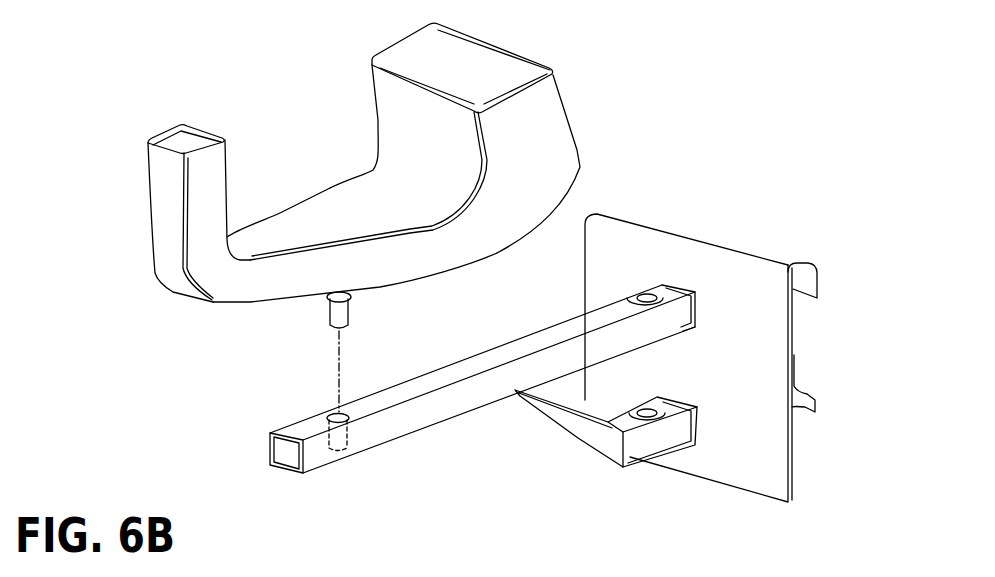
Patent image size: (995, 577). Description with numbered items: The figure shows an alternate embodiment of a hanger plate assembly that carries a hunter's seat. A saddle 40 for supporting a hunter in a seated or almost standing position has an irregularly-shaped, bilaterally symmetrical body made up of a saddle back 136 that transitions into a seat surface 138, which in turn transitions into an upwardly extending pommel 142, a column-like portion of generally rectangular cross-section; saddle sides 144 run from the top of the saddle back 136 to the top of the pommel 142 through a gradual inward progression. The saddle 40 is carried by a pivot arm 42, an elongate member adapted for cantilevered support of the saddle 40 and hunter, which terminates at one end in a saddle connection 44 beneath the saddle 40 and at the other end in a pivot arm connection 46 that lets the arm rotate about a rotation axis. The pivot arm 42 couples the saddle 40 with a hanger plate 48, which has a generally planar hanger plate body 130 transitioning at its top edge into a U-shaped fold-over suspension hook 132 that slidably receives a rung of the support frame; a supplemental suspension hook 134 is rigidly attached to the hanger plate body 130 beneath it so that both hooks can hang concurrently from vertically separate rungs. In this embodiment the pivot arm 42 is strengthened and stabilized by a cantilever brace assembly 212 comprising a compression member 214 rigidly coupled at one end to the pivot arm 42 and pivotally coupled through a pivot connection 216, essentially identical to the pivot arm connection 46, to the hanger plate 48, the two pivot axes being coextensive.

The saddle 40 is at (342, 175).
The pivot arm 42 is at (482, 341).
The saddle connection 44 is at (355, 313).
The pivot arm connection 46 is at (640, 285).
The hanger plate 48 is at (743, 250).
The hanger plate body 130 is at (722, 367).
The suspension hook 132 is at (817, 267).
The supplemental suspension hook 134 is at (818, 399).
The saddle back 136 is at (430, 62).
The seat surface 138 is at (378, 212).
The pommel 142 is at (180, 142).
The saddle sides 144 is at (497, 220).
The cantilever brace assembly 212 is at (596, 468).
The compression member 214 is at (575, 445).
The pivot connection 216 is at (682, 457).